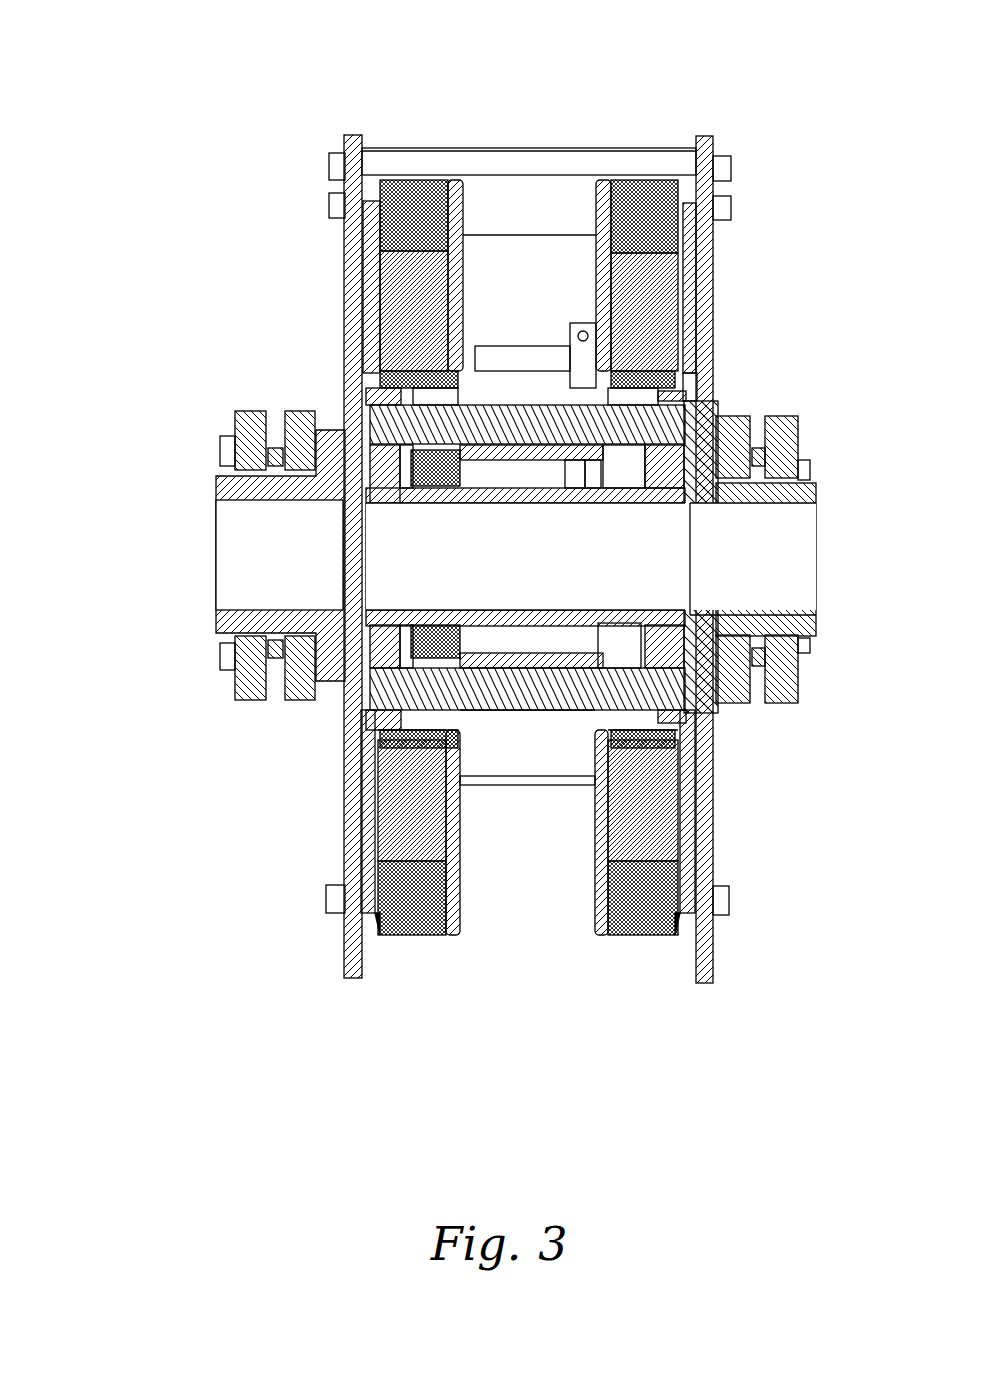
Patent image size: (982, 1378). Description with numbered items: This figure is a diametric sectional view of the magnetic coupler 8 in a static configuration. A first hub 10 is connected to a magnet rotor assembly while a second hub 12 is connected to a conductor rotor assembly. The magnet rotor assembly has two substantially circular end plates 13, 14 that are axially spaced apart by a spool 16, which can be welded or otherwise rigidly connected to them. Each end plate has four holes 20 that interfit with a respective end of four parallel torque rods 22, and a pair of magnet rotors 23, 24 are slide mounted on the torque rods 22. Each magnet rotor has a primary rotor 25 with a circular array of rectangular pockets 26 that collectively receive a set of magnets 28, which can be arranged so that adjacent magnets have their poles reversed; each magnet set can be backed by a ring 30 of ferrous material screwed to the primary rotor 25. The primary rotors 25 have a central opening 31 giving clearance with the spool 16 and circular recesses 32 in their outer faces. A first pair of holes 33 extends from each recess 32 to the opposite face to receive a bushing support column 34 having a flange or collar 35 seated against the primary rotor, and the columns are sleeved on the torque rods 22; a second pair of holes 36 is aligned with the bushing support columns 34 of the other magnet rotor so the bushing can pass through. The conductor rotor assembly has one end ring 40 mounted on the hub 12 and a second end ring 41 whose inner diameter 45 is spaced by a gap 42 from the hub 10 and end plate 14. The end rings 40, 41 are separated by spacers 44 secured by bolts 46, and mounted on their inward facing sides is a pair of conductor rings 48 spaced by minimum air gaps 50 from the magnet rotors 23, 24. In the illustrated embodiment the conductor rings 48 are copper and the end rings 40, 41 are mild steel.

The clutch/brake assembly 8 is at (122, 339).
The first hub 10 is at (812, 550).
The second hub 12 is at (205, 545).
The end plate 13 is at (363, 645).
The end plate 14 is at (658, 620).
The spool 16 is at (524, 602).
The holes 20 is at (365, 400).
The torque rods 22 is at (620, 397).
The magnet rotor 23 is at (632, 175).
The magnet rotor 24 is at (384, 207).
The primary rotor 25 is at (372, 197).
The rectangular pockets 26 is at (368, 272).
The magnets 28 is at (400, 293).
The ring 30 is at (456, 255).
The central opening 31 is at (430, 478).
The circular recesses 32 is at (405, 722).
The first pair of holes 33 is at (487, 777).
The bushing support column 34 is at (517, 713).
The flange or collar 35 is at (457, 640).
The second pair of holes 36 is at (609, 662).
The end ring 40 is at (337, 935).
The second end ring 41 is at (704, 940).
The gap 42 is at (702, 393).
The spacers 44 is at (530, 140).
The inner diameter 45 is at (690, 383).
The bolts 46 is at (325, 158).
The conductor rings 48 is at (360, 900).
The minimum air gaps 50 is at (370, 915).